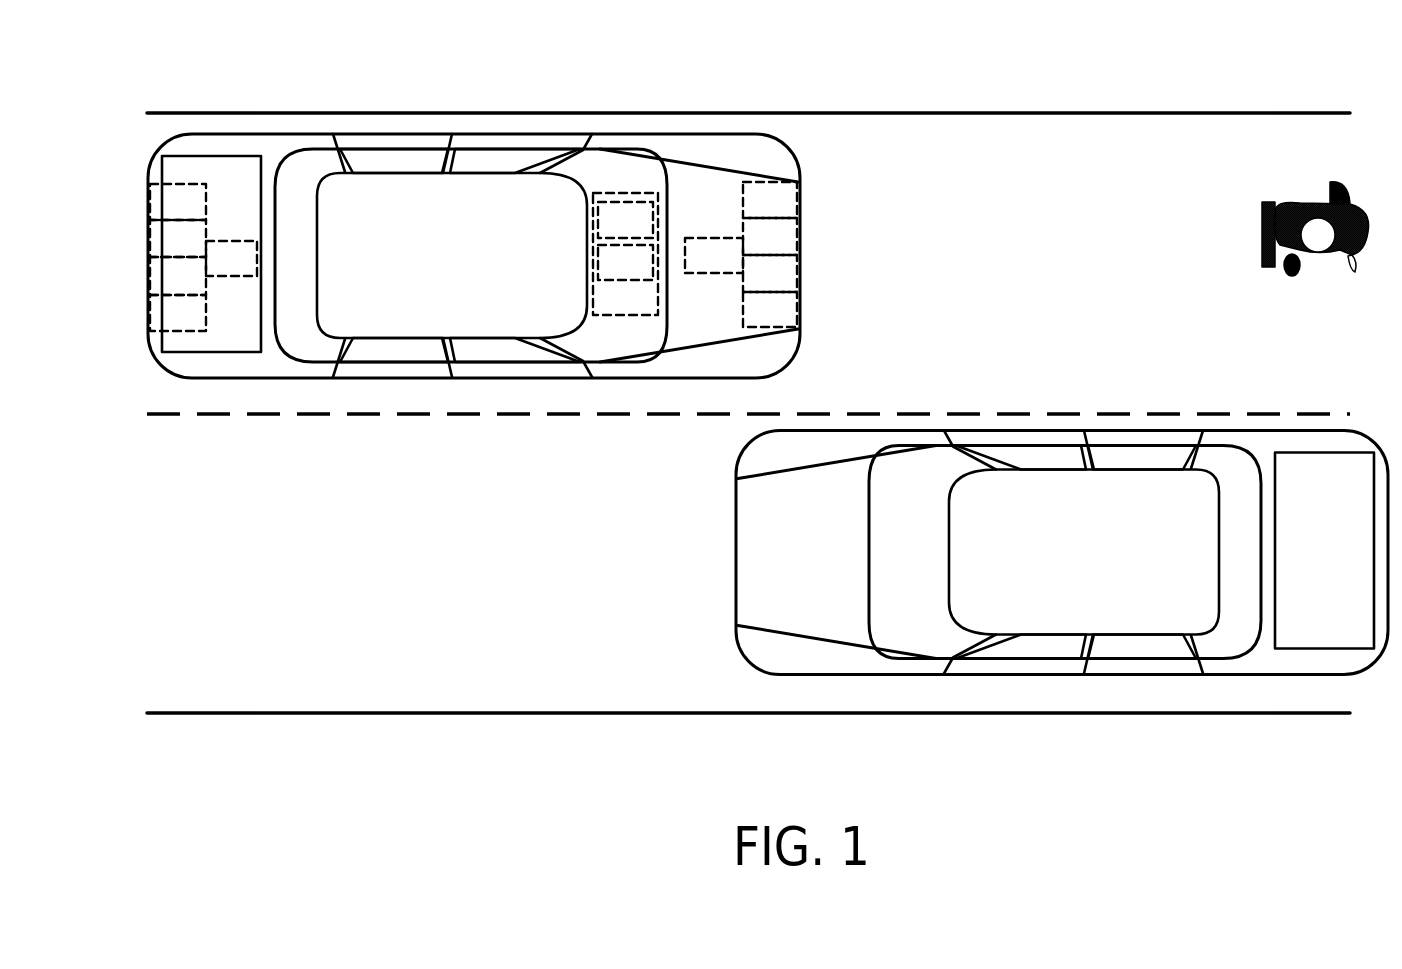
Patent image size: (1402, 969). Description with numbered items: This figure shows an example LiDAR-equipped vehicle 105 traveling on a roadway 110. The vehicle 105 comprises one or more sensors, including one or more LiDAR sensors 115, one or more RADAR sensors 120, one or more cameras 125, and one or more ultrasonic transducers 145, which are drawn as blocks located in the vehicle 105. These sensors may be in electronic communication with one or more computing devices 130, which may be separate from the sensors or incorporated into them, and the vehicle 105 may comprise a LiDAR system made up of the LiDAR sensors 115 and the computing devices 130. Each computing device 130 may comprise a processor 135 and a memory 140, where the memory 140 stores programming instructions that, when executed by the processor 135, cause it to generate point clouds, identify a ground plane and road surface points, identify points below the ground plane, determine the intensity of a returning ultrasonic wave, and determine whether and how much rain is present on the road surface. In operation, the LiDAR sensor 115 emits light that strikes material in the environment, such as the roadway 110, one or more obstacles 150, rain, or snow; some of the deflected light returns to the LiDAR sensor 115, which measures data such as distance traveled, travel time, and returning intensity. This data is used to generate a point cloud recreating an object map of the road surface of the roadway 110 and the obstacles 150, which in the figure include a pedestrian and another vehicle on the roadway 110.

The vehicle 105 is at (648, 133).
The roadway 110 is at (872, 150).
The LiDAR sensor 115 is at (196, 252).
The RADAR sensor 120 is at (196, 290).
The camera 125 is at (196, 215).
The computing device 130 is at (644, 310).
The processor 135 is at (644, 230).
The memory 140 is at (644, 275).
The ultrasonic transducer 145 is at (250, 271).
The obstacle 150 is at (1270, 225).